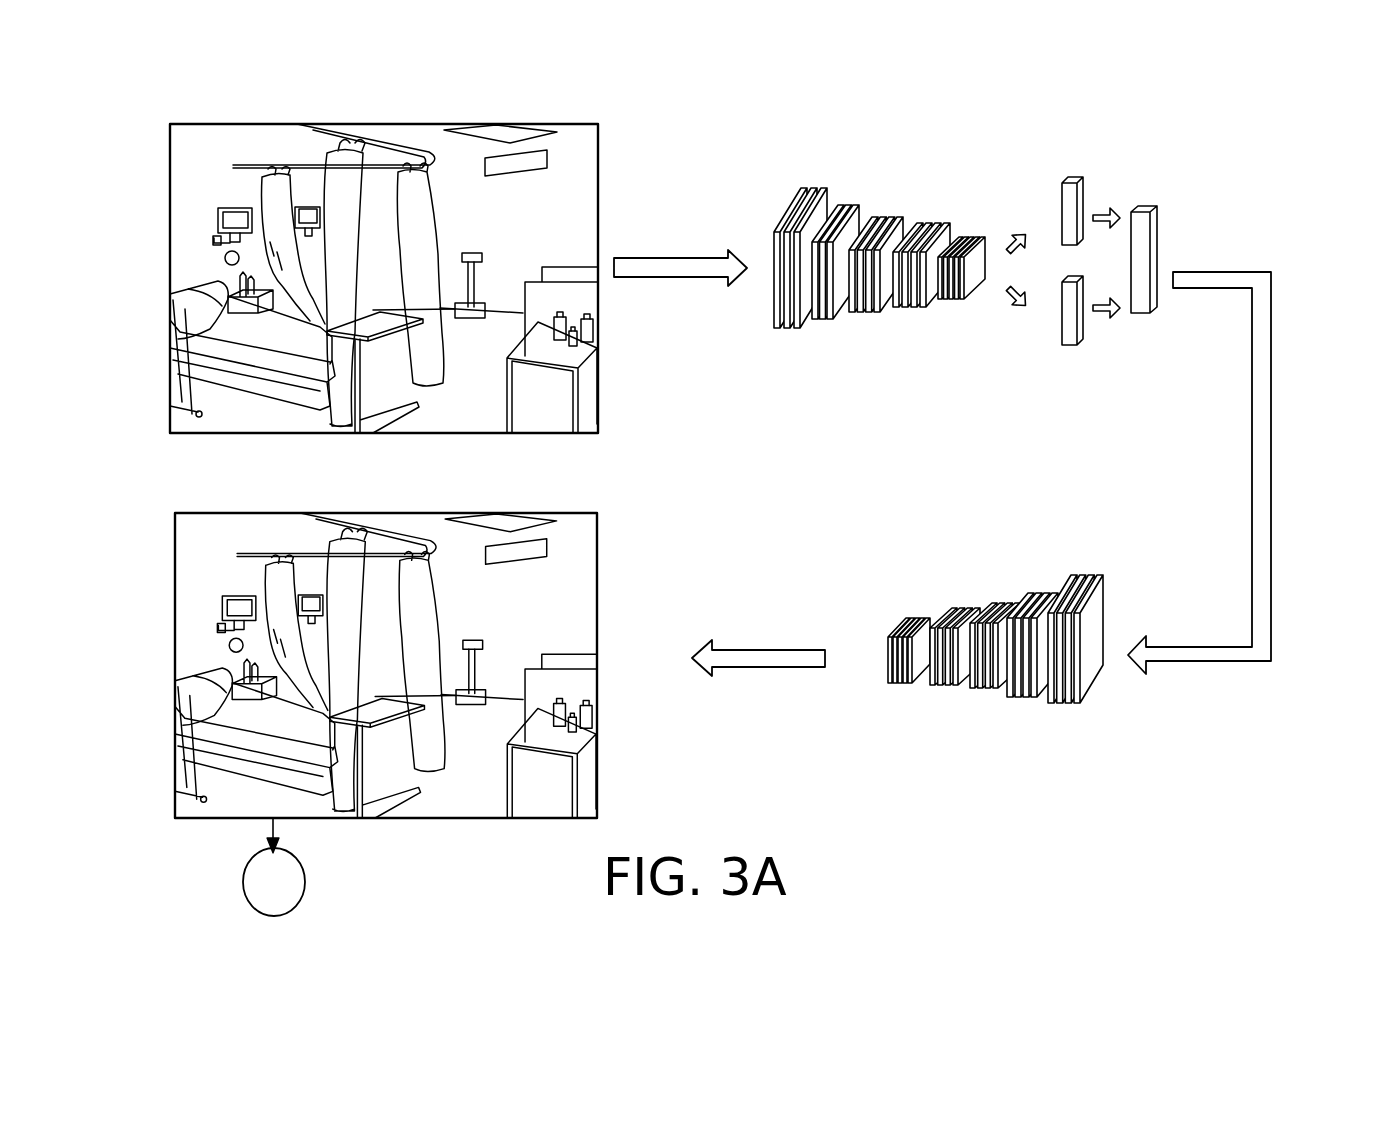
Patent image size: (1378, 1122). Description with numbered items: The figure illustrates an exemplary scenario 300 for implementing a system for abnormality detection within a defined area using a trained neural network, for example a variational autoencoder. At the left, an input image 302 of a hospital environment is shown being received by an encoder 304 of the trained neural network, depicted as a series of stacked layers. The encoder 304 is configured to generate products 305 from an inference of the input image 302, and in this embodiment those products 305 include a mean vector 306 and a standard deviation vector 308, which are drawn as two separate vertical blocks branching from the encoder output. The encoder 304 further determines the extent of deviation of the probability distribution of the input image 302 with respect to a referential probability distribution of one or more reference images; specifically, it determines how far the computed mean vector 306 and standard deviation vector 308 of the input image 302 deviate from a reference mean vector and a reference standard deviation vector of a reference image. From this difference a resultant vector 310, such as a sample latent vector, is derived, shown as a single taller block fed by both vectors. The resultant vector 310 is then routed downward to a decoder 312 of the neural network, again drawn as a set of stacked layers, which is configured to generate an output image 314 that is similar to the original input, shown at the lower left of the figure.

The exemplary scenario 300 is at (1283, 85).
The input image 302 is at (598, 140).
The encoder 304 is at (818, 190).
The products 305 is at (1027, 170).
The mean vector 306 is at (1065, 180).
The standard deviation vector 308 is at (1062, 345).
The resultant vector 310 is at (1143, 232).
The decoder 312 is at (1080, 577).
The output image 314 is at (597, 566).